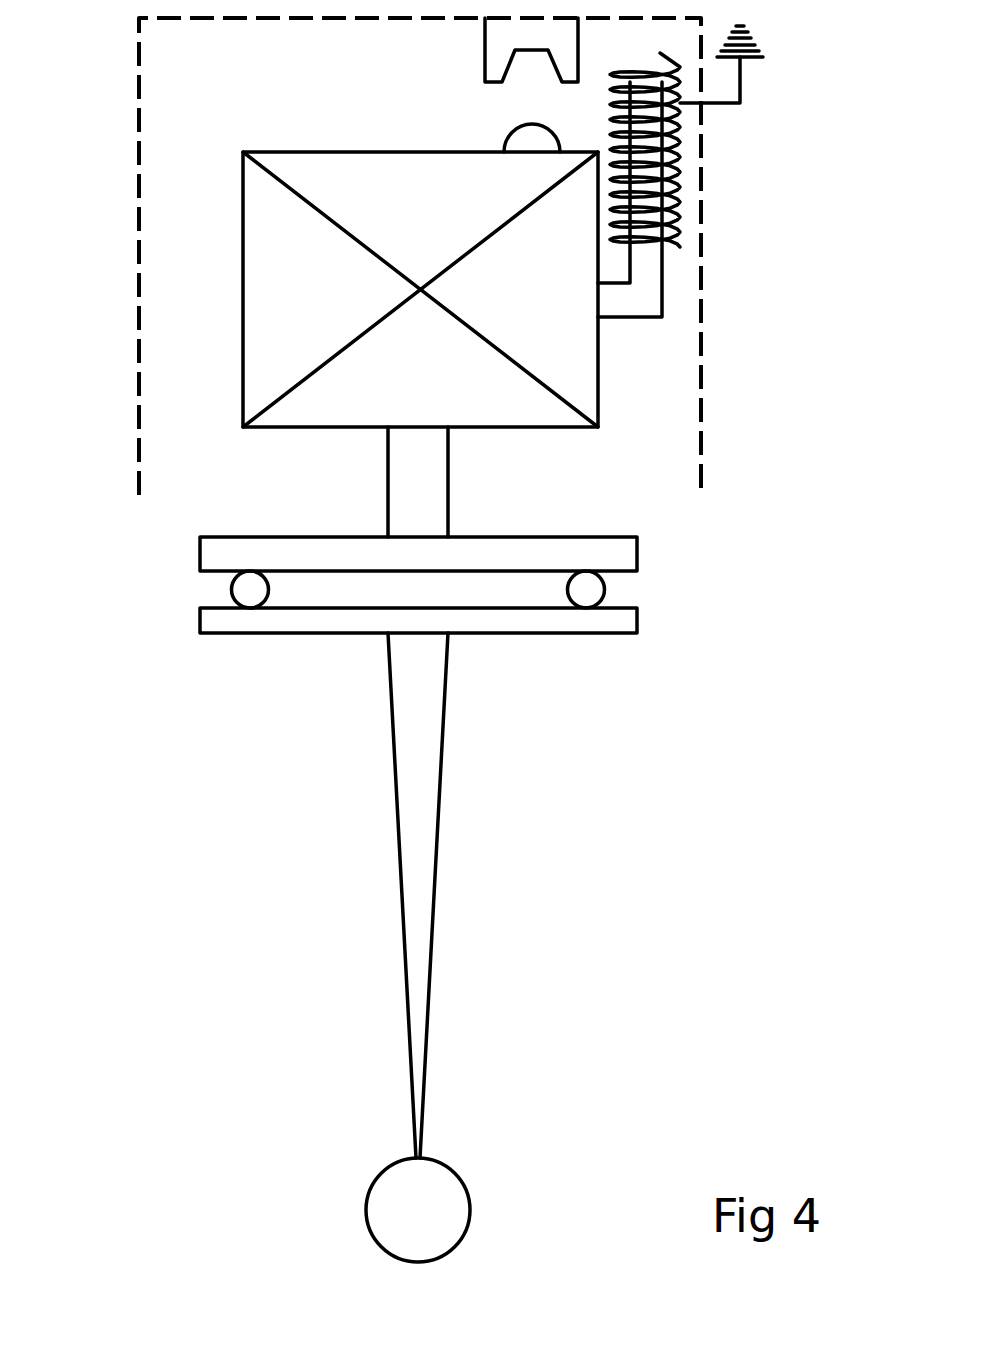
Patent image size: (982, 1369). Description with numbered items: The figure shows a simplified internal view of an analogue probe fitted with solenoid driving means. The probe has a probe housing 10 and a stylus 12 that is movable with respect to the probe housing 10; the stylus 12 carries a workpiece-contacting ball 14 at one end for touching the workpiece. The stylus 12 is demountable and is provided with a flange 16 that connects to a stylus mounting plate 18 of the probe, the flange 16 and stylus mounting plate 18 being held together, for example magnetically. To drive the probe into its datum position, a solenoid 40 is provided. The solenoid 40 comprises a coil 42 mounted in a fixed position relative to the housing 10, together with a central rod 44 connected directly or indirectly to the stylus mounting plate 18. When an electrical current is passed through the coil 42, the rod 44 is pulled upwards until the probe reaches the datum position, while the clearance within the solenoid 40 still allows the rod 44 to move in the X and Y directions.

The probe housing 10 is at (707, 378).
The stylus 12 is at (425, 780).
The workpiece-contacting ball 14 is at (440, 1185).
The stylus flange 16 is at (245, 620).
The stylus mounting plate 18 is at (215, 573).
The solenoid 40 is at (714, 173).
The coil 42 is at (673, 205).
The central rod 44 is at (650, 273).